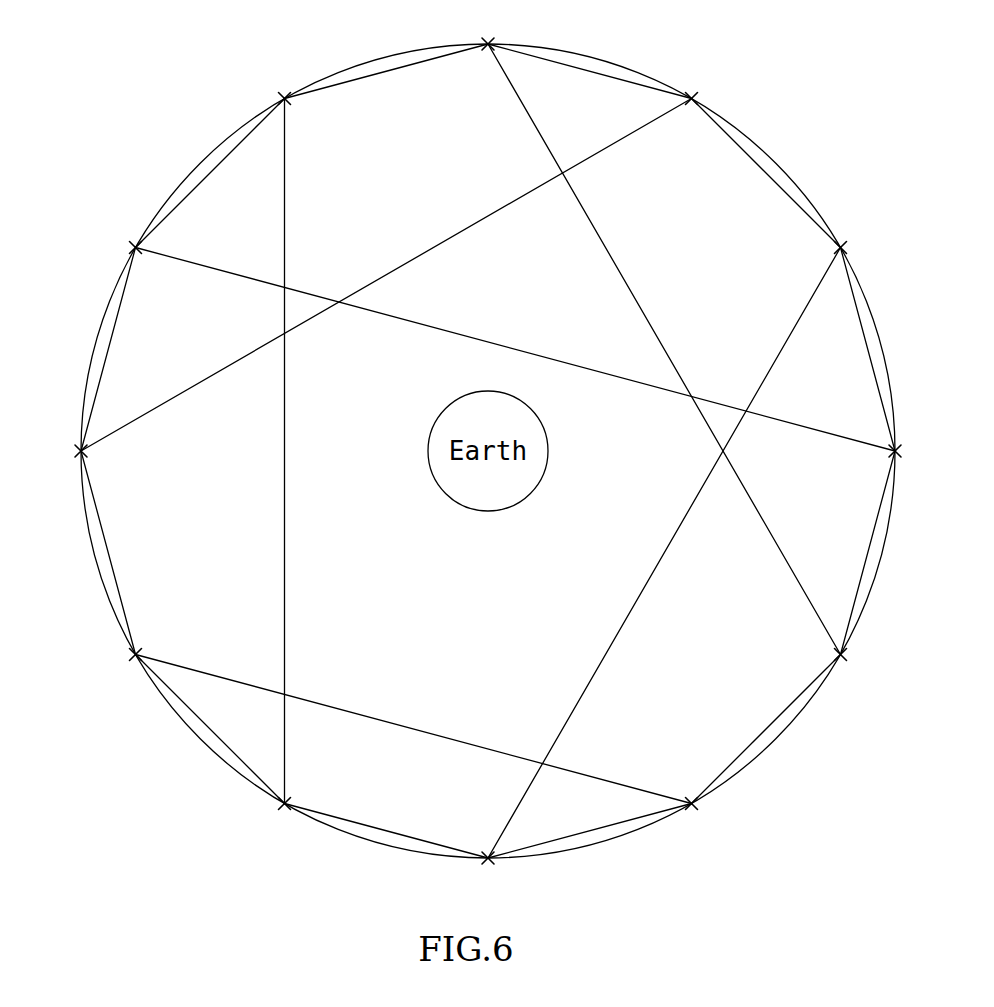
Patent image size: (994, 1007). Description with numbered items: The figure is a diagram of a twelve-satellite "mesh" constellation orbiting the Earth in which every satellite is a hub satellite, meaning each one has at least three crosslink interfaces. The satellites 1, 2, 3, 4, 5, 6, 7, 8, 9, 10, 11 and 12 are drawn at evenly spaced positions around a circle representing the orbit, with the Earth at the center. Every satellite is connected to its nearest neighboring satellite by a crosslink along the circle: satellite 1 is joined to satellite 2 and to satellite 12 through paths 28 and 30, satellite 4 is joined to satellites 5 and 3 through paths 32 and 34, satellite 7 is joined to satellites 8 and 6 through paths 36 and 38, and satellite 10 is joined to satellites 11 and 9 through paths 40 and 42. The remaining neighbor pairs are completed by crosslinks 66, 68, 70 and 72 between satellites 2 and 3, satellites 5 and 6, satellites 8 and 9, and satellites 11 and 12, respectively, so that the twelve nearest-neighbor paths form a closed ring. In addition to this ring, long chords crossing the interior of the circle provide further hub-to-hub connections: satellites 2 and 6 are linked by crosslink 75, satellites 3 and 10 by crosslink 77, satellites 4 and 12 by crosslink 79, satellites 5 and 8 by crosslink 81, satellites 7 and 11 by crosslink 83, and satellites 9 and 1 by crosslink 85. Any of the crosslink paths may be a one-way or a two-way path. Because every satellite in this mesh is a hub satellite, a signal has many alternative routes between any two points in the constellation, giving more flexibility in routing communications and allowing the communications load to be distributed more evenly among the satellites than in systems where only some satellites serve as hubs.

The satellite 1 is at (703, 85).
The satellite 2 is at (854, 233).
The satellite 3 is at (911, 450).
The satellite 4 is at (852, 666).
The satellite 5 is at (704, 818).
The satellite 6 is at (488, 874).
The satellite 7 is at (275, 823).
The satellite 8 is at (123, 666).
The satellite 9 is at (67, 455).
The satellite 10 is at (118, 232).
The satellite 11 is at (269, 84).
The satellite 12 is at (483, 29).
The crosslink path 28 is at (762, 171).
The crosslink path 30 is at (591, 72).
The crosslink path 32 is at (765, 728).
The crosslink path 34 is at (867, 555).
The crosslink path 36 is at (212, 732).
The crosslink path 38 is at (387, 828).
The crosslink path 40 is at (208, 175).
The crosslink path 42 is at (108, 350).
The crosslink 66 is at (865, 342).
The crosslink 68 is at (560, 837).
The crosslink 70 is at (108, 552).
The crosslink 72 is at (383, 75).
The crosslink 75 is at (652, 578).
The crosslink 77 is at (600, 371).
The crosslink 79 is at (752, 500).
The crosslink 81 is at (508, 752).
The crosslink 83 is at (287, 622).
The crosslink 85 is at (180, 395).